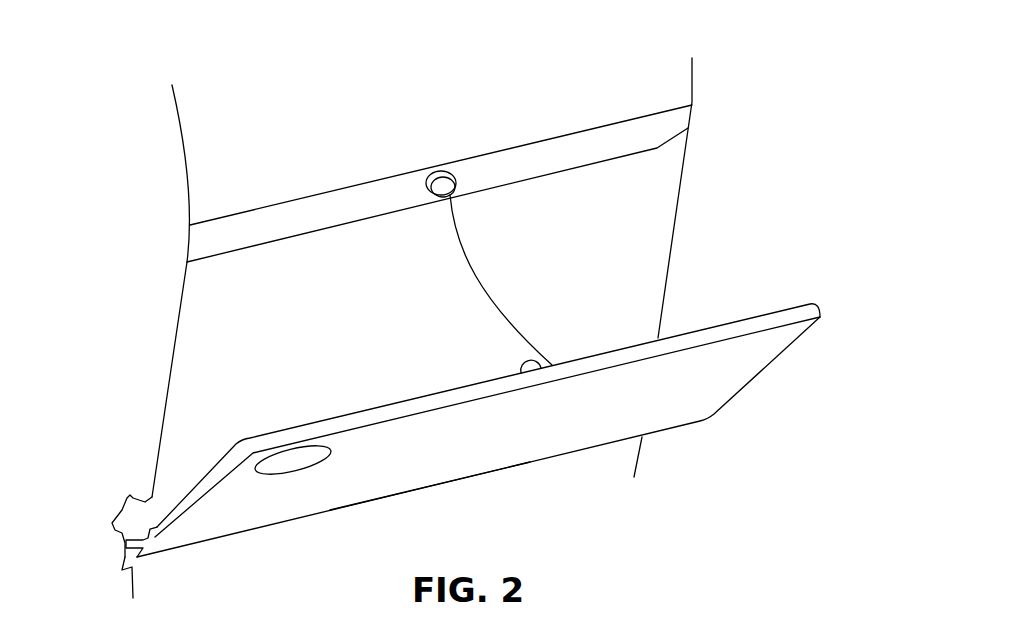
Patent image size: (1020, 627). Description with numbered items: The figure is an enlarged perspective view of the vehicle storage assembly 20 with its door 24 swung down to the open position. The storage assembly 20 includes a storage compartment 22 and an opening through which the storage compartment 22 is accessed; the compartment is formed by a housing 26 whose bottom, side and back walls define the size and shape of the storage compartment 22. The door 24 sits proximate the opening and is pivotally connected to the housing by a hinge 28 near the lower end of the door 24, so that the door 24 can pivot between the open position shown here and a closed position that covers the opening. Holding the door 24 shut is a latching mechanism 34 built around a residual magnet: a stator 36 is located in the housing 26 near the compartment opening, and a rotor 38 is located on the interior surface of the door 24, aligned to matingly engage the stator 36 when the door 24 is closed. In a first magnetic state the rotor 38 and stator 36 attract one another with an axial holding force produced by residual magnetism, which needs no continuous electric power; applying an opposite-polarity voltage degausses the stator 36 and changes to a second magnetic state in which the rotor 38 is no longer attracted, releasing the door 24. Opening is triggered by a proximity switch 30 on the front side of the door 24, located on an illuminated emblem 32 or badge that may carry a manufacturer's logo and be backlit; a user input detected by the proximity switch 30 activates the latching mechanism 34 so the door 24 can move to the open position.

The vehicle storage assembly 20 is at (748, 273).
The storage compartment 22 is at (610, 240).
The door 24 is at (738, 376).
The housing 26 is at (605, 140).
The hinge 28 is at (125, 542).
The proximity switch 30 is at (282, 467).
The illuminated emblem 32 is at (313, 463).
The latching mechanism 34 is at (380, 257).
The stator 36 is at (446, 192).
The rotor 38 is at (522, 365).